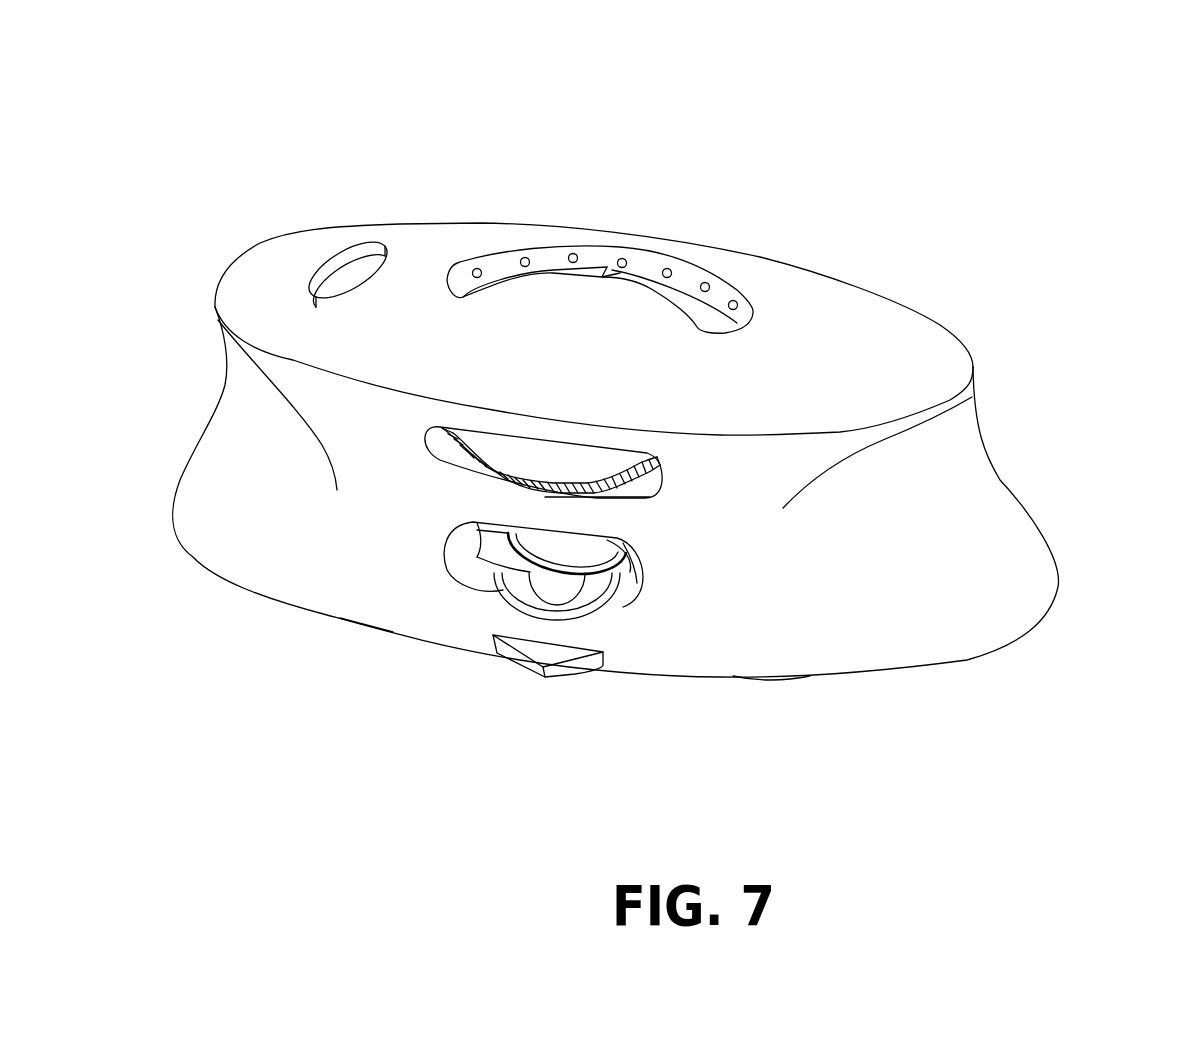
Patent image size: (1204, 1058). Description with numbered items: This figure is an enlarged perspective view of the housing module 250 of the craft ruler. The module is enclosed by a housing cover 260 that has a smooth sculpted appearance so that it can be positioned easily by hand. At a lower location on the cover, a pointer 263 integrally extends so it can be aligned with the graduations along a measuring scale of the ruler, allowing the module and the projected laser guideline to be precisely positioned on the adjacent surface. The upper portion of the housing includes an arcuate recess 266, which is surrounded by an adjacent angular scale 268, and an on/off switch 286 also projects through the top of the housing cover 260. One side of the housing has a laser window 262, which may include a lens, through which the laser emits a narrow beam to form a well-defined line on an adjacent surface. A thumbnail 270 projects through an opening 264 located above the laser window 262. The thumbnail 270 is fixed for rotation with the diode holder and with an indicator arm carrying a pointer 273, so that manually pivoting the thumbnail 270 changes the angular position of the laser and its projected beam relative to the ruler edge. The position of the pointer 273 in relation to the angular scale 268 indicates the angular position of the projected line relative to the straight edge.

The housing module 250 is at (310, 118).
The housing cover 260 is at (907, 343).
The laser window 262 is at (557, 592).
The pointer 263 is at (547, 652).
The opening 264 is at (663, 478).
The arcuate recess 266 is at (708, 313).
The angular scale 268 is at (500, 270).
The thumbnail 270 is at (597, 467).
The pointer 273 is at (612, 267).
The on/off switch 286 is at (342, 263).